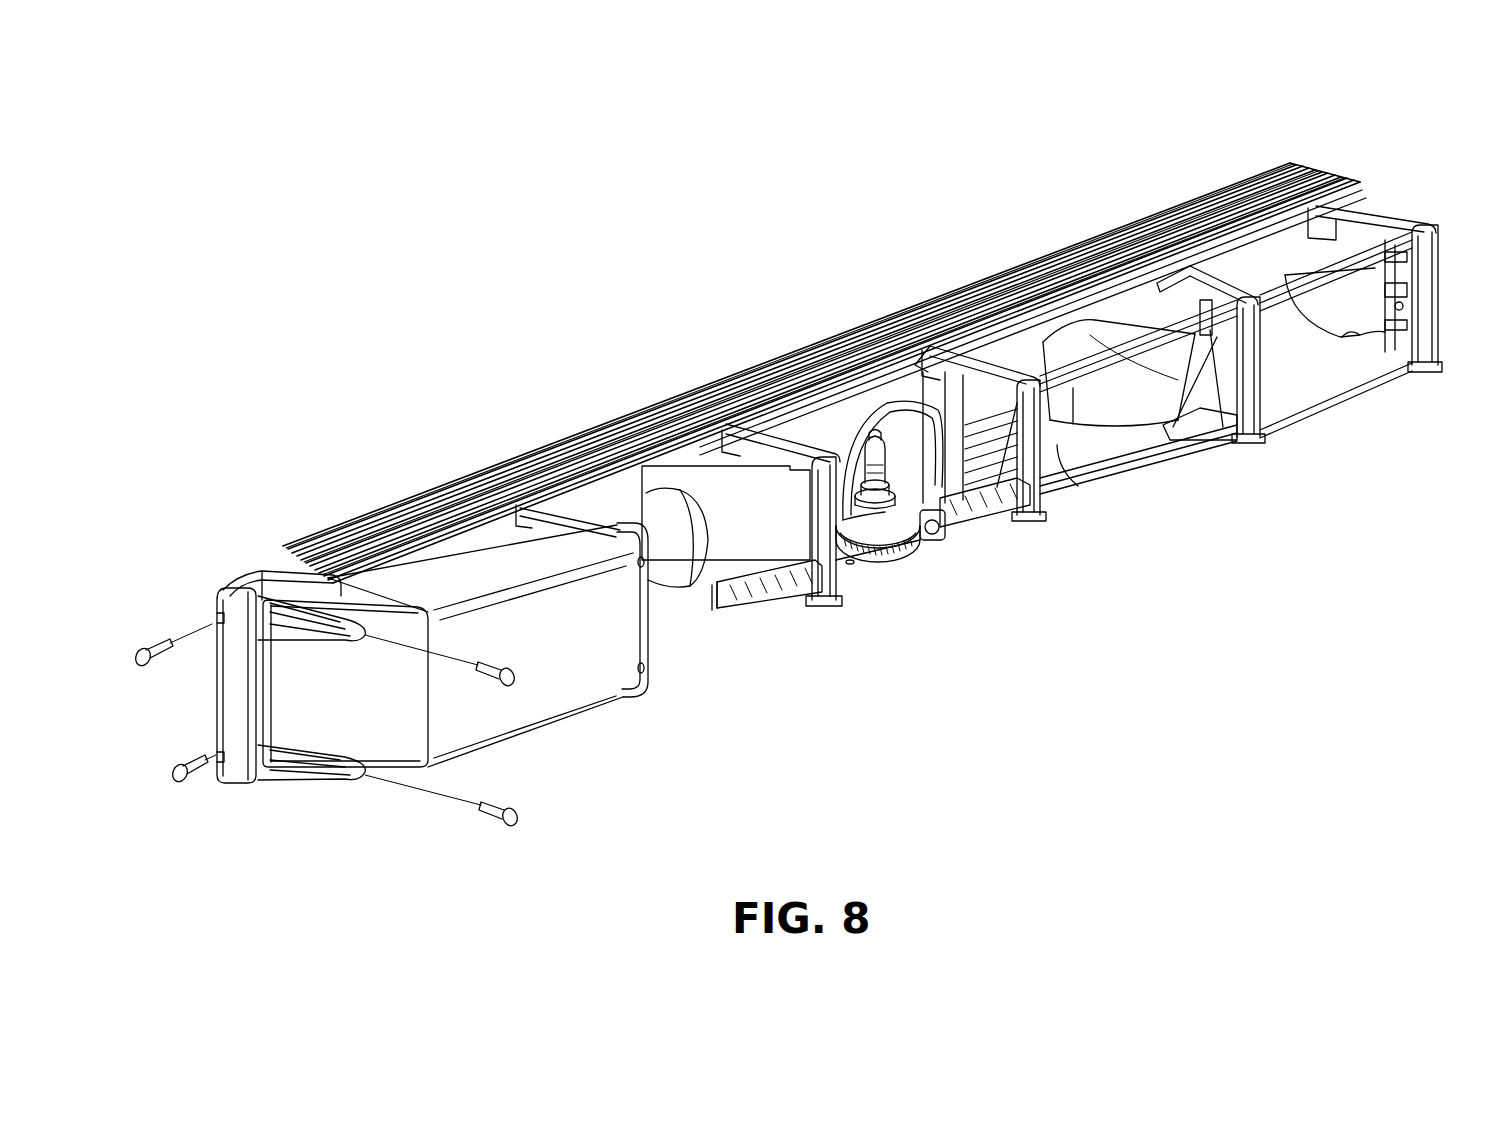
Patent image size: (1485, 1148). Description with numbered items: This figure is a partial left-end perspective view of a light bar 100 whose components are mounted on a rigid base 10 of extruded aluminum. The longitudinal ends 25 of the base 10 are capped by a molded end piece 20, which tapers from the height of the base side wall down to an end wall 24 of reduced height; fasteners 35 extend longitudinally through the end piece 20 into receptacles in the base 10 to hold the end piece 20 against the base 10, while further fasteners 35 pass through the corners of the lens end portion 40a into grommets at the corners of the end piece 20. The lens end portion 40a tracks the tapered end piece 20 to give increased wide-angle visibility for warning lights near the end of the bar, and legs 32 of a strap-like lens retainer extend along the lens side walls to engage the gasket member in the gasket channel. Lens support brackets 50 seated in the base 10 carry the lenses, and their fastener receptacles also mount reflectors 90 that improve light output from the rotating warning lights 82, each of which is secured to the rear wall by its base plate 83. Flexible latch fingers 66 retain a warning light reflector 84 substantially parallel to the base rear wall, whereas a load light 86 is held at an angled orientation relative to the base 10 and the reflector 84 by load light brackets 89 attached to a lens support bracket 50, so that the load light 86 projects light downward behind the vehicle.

The light bar 100 is at (575, 350).
The base 10 is at (846, 334).
The molded end piece 20 is at (253, 577).
The end wall 24 is at (228, 693).
The longitudinal ends 25 is at (285, 548).
The legs 32 is at (540, 490).
The fasteners 35 is at (182, 780).
The lens end portion 40a is at (500, 703).
The lens support bracket 50 is at (737, 456).
The flexible latch fingers 66 is at (1387, 318).
The rotating warning light 82 is at (884, 525).
The base plate 83 is at (918, 545).
The warning light reflector 84 is at (1290, 355).
The load light 86 is at (1060, 450).
The load light brackets 89 is at (1198, 405).
The reflectors 90 is at (772, 528).